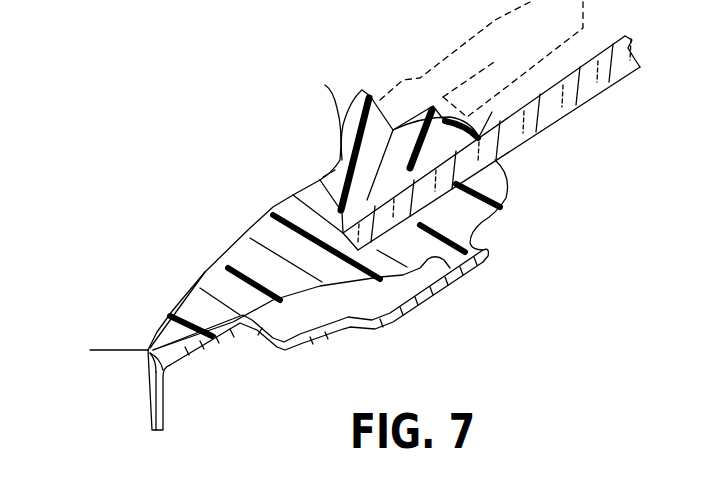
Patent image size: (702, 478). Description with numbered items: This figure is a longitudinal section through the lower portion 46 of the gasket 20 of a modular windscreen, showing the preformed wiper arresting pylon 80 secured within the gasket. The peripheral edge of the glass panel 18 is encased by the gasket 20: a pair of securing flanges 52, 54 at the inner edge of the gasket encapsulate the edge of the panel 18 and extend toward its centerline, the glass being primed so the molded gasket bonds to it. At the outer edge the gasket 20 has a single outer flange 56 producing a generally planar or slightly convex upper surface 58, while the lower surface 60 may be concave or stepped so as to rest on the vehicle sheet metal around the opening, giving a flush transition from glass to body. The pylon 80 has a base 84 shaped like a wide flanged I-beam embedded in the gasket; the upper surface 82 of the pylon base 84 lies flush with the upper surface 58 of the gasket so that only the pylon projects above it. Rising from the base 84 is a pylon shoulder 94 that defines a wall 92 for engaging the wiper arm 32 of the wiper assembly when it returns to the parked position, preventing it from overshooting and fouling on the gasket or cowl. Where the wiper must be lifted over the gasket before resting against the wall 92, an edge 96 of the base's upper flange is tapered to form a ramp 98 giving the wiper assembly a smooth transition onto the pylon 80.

The panel 18 is at (612, 78).
The gasket 20 is at (100, 273).
The wiper arm 32 is at (407, 78).
The lower portion 46 is at (175, 300).
The securing flange 52 is at (470, 117).
The securing flange 54 is at (508, 197).
The outer flange 56 is at (150, 340).
The upper surface 58 is at (207, 270).
The lower surface 60 is at (426, 304).
The pylon 80 is at (318, 112).
The upper surface 82 is at (320, 168).
The pylon base 84 is at (318, 193).
The wall 92 is at (372, 90).
The pylon shoulder 94 is at (353, 97).
The edge 96 is at (416, 97).
The ramp 98 is at (428, 122).